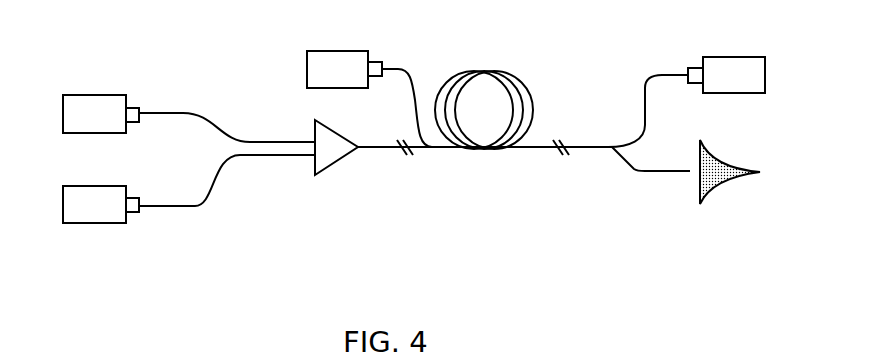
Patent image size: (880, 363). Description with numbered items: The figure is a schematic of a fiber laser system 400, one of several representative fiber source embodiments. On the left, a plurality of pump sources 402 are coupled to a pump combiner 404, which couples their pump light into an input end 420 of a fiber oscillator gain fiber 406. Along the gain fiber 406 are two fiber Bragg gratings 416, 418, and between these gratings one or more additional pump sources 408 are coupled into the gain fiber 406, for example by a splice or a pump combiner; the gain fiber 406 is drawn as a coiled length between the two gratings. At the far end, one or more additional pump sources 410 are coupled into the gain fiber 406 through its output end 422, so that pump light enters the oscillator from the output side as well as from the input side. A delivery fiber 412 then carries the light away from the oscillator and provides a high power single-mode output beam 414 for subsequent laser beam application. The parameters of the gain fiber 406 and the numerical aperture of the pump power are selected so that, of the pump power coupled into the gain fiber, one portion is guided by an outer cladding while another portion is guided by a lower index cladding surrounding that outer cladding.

The fiber laser system 400 is at (317, 253).
The pump sources 402 is at (189, 159).
The pump combiner 404 is at (322, 125).
The fiber oscillator gain fiber 406 is at (482, 72).
The additional pump sources 408 is at (369, 99).
The additional pump sources 410 is at (726, 75).
The delivery fiber 412 is at (638, 174).
The high power single-mode output beam 414 is at (727, 176).
The fiber Bragg grating 416 is at (407, 152).
The fiber Bragg grating 418 is at (563, 152).
The input end 420 is at (373, 147).
The output end 422 is at (585, 147).